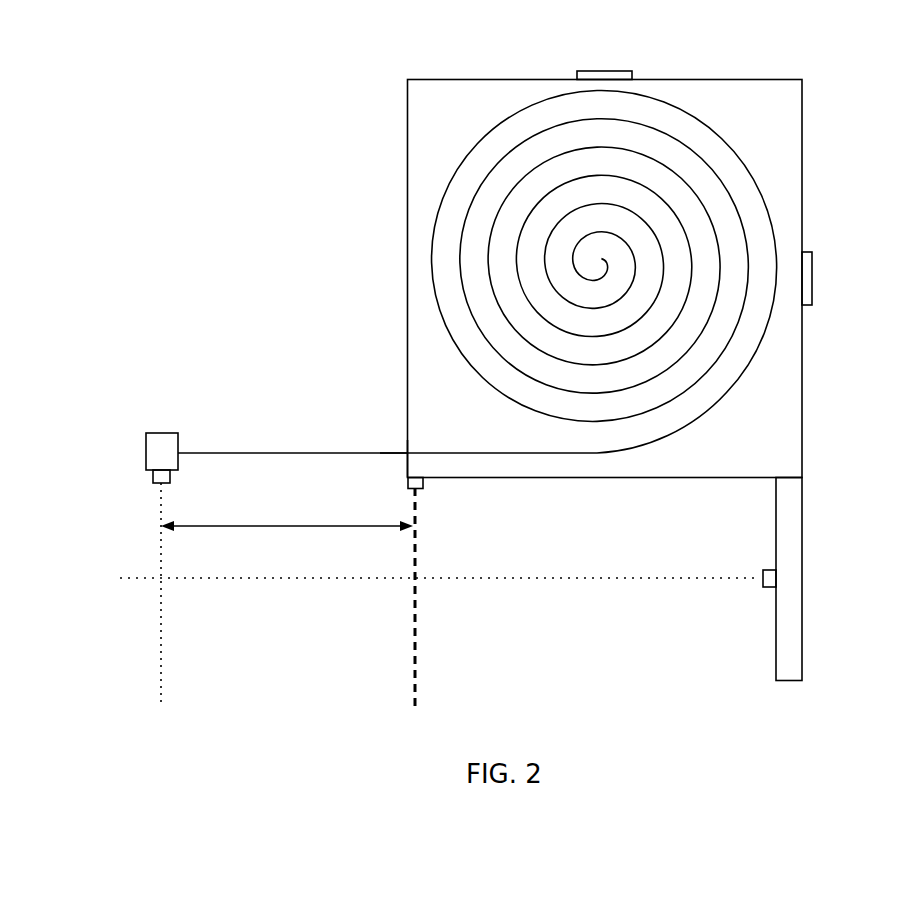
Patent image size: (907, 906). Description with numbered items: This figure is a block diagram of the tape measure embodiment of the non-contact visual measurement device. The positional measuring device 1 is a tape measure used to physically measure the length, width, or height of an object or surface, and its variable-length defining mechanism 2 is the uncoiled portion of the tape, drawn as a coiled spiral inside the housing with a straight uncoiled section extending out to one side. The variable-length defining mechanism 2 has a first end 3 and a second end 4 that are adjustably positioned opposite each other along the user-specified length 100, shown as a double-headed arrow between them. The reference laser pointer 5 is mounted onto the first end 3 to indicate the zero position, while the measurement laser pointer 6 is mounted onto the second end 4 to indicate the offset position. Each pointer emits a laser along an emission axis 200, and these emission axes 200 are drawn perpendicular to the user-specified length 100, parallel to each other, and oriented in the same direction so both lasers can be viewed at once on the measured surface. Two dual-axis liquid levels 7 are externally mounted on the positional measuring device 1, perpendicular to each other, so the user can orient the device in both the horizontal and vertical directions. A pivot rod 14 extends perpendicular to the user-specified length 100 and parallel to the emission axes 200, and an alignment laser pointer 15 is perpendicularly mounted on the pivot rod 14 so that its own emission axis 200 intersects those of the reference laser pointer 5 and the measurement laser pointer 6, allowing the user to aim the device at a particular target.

The positional measuring device 1 is at (803, 68).
The variable-length defining mechanism 2 is at (477, 117).
The first end 3 is at (399, 467).
The second end 4 is at (142, 453).
The reference laser pointer 5 is at (420, 489).
The measurement laser pointer 6 is at (155, 484).
The dual-axis liquid level 7 is at (586, 73).
The pivot rod 14 is at (795, 566).
The alignment laser pointer 15 is at (763, 584).
The user-specified length 100 is at (248, 526).
The emission axis 200 is at (161, 657).